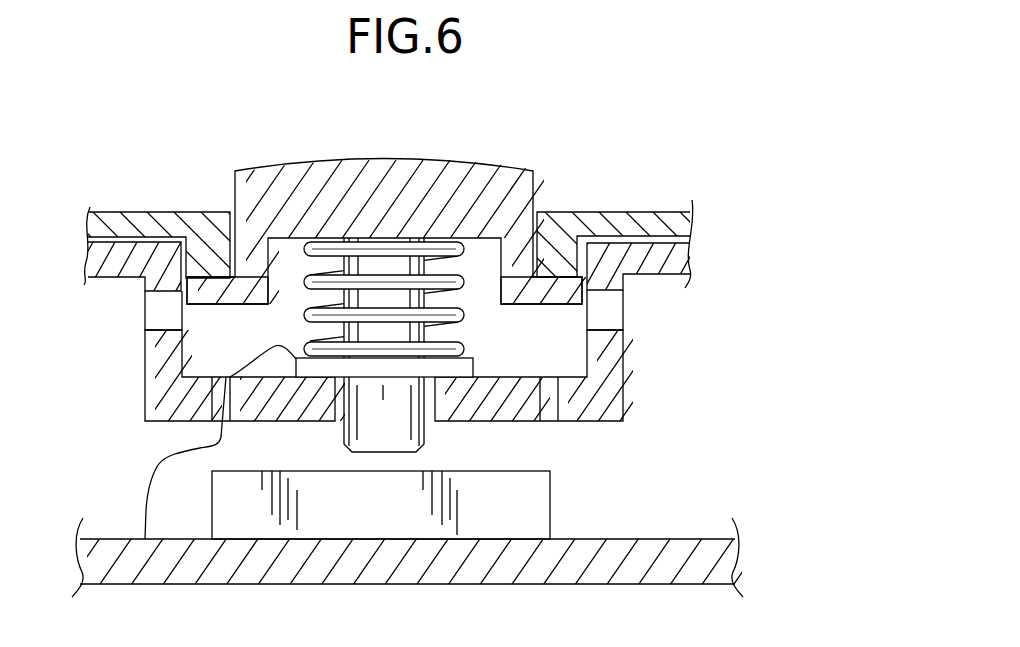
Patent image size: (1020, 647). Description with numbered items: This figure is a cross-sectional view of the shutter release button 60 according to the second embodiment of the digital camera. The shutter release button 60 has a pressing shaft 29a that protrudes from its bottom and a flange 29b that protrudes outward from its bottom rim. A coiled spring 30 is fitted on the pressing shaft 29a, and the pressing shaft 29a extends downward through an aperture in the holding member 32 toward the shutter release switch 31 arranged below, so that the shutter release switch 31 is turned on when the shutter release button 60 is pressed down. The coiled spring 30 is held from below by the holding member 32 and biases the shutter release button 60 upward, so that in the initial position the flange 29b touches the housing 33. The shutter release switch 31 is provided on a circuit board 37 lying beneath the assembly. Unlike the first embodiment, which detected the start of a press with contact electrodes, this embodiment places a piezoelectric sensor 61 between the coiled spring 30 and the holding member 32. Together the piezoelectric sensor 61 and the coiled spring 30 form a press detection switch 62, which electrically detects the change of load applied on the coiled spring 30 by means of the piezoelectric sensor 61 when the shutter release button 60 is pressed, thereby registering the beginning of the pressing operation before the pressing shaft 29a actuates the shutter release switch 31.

The shutter release button 60 is at (395, 171).
The pressing shaft 29a is at (395, 443).
The flange 29b is at (217, 293).
The coiled spring 30 is at (462, 315).
The shutter release switch 31 is at (533, 500).
The holding member 32 is at (122, 253).
The housing 33 is at (160, 222).
The circuit board 37 is at (333, 586).
The piezoelectric sensor 61 is at (460, 367).
The press detection switch 62 is at (550, 358).